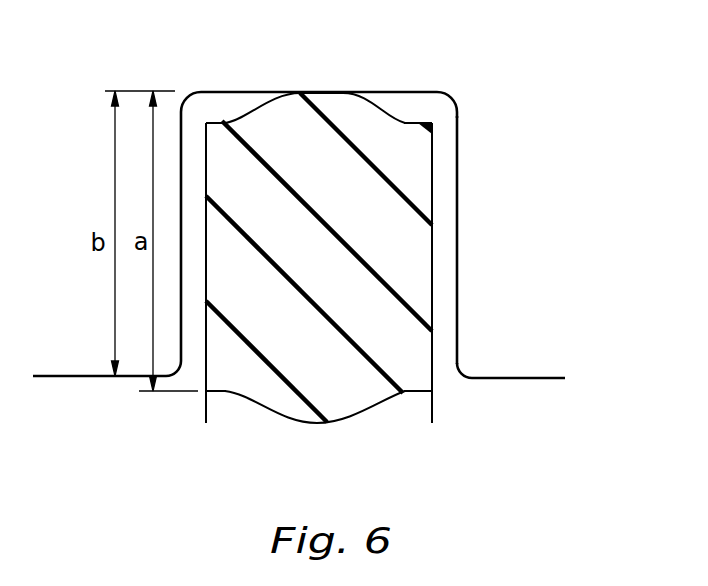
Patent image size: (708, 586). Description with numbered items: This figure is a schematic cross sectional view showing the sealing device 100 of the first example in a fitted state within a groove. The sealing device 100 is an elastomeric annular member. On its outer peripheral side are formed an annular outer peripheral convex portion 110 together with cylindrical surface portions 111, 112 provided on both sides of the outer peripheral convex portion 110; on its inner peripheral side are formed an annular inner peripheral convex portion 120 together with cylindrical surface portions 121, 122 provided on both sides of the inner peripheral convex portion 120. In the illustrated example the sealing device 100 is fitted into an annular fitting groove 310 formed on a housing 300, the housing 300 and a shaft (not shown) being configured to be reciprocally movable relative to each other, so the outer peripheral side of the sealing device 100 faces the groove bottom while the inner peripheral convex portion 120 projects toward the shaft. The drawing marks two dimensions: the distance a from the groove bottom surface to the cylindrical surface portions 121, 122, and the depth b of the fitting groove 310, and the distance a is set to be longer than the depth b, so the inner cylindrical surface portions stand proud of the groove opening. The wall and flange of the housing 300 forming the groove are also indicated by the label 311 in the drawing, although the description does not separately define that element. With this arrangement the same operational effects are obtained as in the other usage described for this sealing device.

The sealing device 100 is at (268, 258).
The outer peripheral convex portion 110 is at (327, 92).
The cylindrical surface portion 111 is at (225, 122).
The cylindrical surface portion 112 is at (413, 121).
The inner peripheral convex portion 120 is at (318, 425).
The cylindrical surface portion 121 is at (225, 393).
The cylindrical surface portion 122 is at (410, 393).
The housing 300 is at (292, 234).
The fitting groove 310 is at (457, 297).
The flange portion of case 311 is at (459, 380).